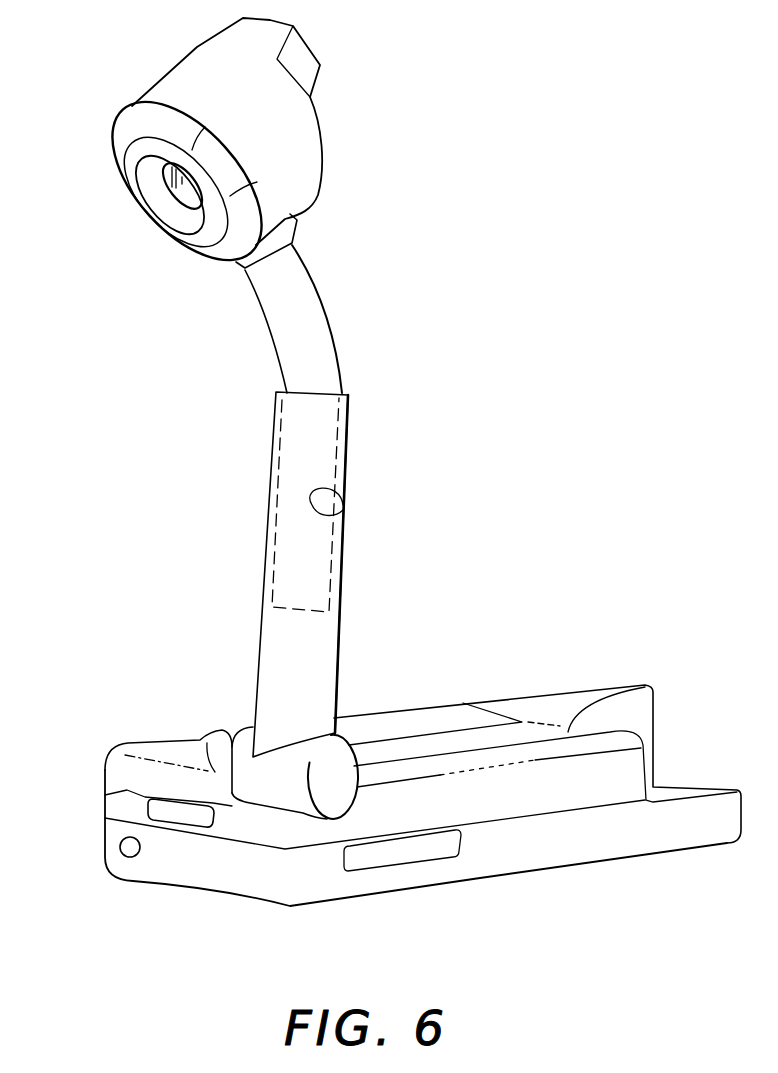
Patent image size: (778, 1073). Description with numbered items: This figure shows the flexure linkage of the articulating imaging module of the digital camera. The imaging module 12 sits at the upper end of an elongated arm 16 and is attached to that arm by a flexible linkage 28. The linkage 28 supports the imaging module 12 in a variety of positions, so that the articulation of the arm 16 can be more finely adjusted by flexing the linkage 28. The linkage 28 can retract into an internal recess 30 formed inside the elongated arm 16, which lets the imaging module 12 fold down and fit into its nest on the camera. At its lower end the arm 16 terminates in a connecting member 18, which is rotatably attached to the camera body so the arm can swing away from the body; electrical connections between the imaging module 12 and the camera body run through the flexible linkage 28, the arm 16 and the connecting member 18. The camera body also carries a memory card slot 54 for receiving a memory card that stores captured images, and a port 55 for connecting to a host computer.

The imaging module 12 is at (252, 117).
The flexible linkage 28 is at (295, 308).
The elongated arm 16 is at (341, 588).
The internal recess 30 is at (343, 505).
The connecting member 18 is at (317, 766).
The memory card slot 54 is at (105, 795).
The port 55 is at (120, 845).